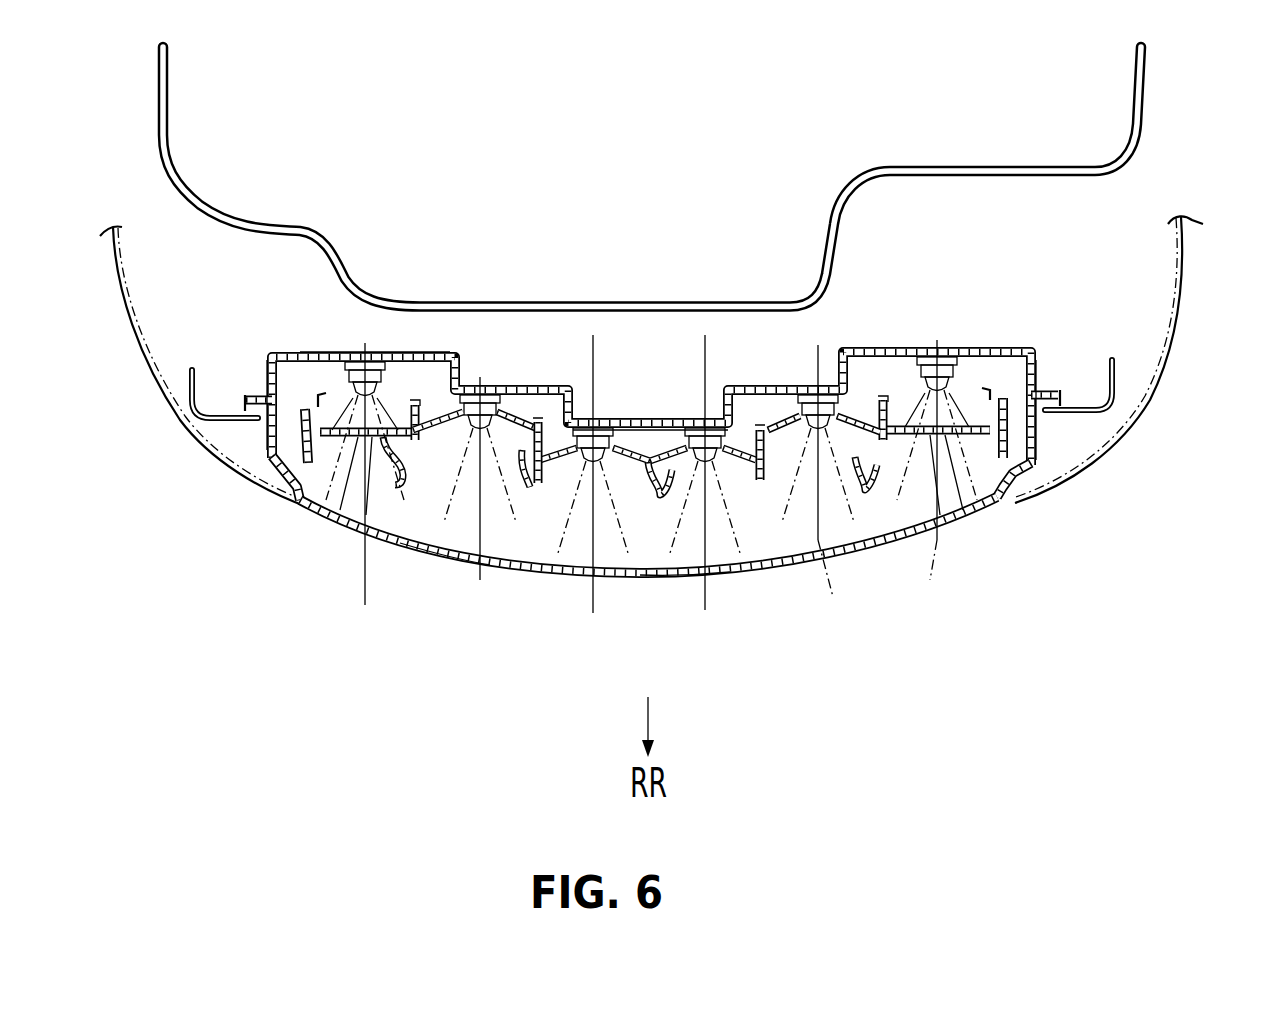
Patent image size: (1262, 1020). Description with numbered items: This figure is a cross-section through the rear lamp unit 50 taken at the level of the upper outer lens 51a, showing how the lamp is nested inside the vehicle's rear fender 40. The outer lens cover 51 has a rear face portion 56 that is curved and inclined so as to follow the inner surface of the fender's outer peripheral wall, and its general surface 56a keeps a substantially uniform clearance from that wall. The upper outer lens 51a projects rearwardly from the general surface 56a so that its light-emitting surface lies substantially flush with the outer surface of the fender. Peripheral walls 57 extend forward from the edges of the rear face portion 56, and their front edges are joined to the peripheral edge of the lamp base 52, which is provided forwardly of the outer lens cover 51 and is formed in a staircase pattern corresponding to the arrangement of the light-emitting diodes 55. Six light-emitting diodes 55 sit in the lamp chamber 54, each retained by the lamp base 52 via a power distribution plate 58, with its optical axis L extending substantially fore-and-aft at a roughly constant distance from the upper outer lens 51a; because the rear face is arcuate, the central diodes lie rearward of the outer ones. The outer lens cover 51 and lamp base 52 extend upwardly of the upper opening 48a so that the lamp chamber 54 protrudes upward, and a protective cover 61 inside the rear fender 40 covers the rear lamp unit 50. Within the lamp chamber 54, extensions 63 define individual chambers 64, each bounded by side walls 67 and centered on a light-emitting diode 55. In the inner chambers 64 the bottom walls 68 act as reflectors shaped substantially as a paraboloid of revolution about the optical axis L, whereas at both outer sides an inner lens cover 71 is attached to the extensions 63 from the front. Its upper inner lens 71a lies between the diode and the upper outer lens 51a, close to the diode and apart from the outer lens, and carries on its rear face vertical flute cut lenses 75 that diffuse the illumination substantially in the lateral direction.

The rear fender 40 is at (1163, 370).
The upper opening 48a is at (1028, 483).
The rear lamp unit 50 is at (652, 484).
The outer lens cover 51 is at (1030, 490).
The upper outer lens 51a is at (437, 552).
The lamp base 52 is at (1032, 345).
The lamp chamber 54 is at (683, 550).
The light-emitting diode 55 is at (750, 482).
The rear face portion 56 is at (241, 511).
The general surface 56a is at (282, 478).
The peripheral wall 57 is at (268, 432).
The power distribution plate 58 is at (436, 352).
The protective cover 61 is at (1013, 166).
The extension 63 is at (750, 421).
The chamber 64 is at (657, 440).
The side wall 67 is at (608, 424).
The bottom wall 68 is at (748, 466).
The inner lens cover 71 is at (677, 516).
The upper inner lens 71a is at (315, 458).
The vertical flute cut lens 75 is at (405, 455).
The optical axis L is at (707, 600).